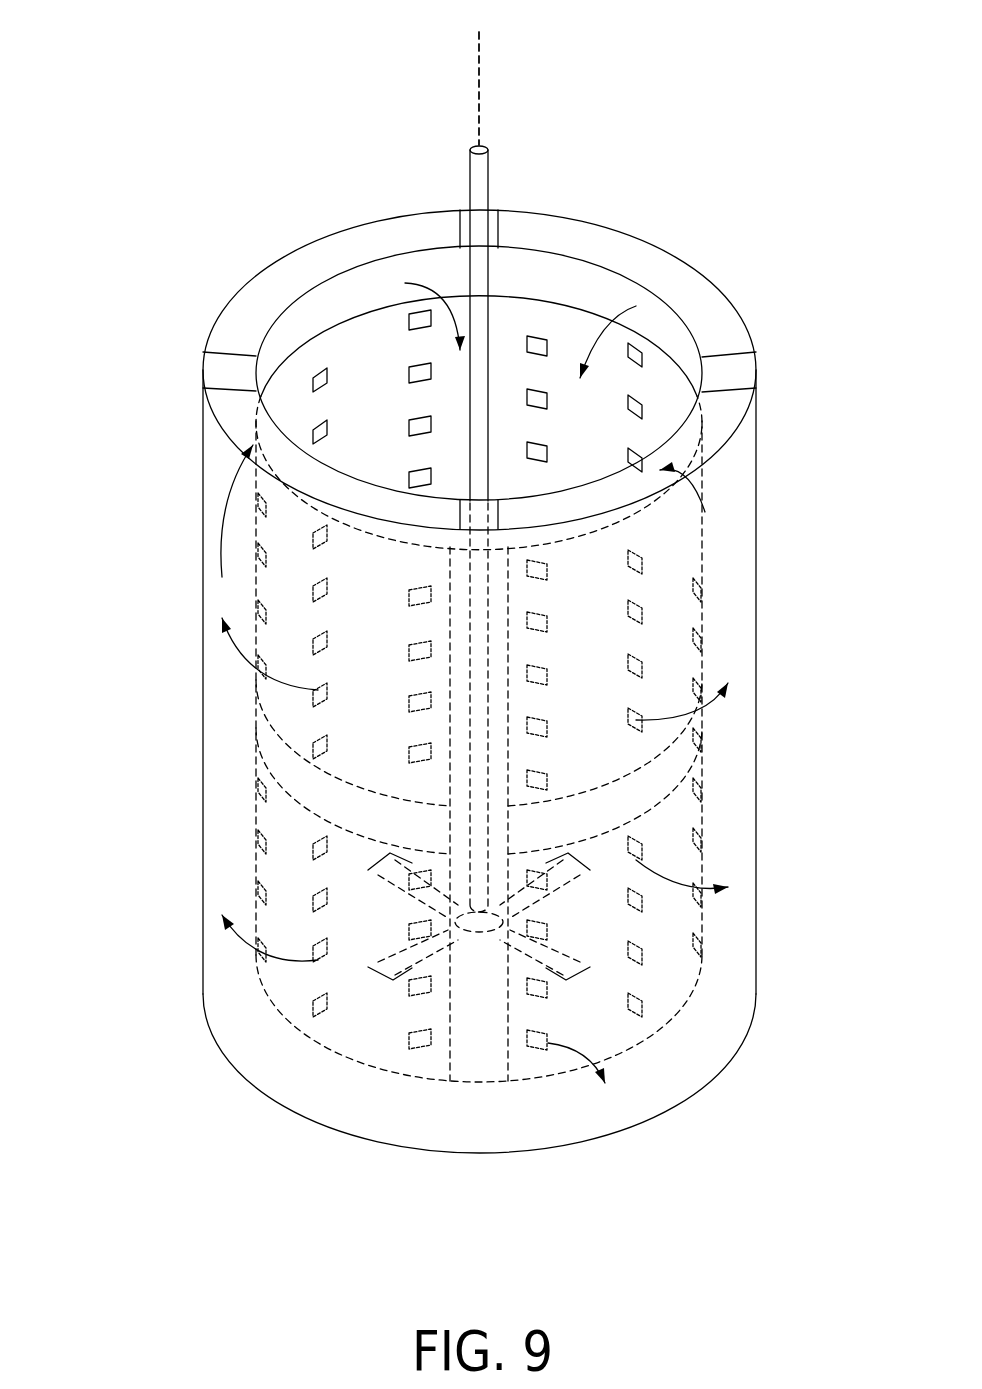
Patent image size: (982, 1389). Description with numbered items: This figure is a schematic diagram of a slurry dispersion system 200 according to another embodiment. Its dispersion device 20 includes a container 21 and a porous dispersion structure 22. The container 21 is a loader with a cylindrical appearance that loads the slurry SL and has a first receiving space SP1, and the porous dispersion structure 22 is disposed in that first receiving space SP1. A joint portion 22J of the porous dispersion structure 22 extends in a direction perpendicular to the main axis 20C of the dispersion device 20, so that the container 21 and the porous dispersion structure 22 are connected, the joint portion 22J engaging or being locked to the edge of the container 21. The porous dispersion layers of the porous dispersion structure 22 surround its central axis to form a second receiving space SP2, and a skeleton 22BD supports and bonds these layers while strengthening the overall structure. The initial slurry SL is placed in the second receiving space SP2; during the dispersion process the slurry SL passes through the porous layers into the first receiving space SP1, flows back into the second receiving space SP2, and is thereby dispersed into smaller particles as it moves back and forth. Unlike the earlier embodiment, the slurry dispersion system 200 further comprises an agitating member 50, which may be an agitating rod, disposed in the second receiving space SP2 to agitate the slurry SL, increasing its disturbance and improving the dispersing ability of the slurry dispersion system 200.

The slurry dispersion system 200 is at (100, 150).
The dispersion device 20 is at (188, 487).
The container 21 is at (770, 668).
The porous dispersion structure 22 is at (723, 597).
The joint portion 22J is at (215, 372).
The skeleton 22BD is at (708, 735).
The main axis 20C is at (479, 73).
The agitating member 50 is at (482, 192).
The first receiving space SP1 is at (237, 388).
The second receiving space SP2 is at (345, 366).
The slurry SL is at (218, 672).